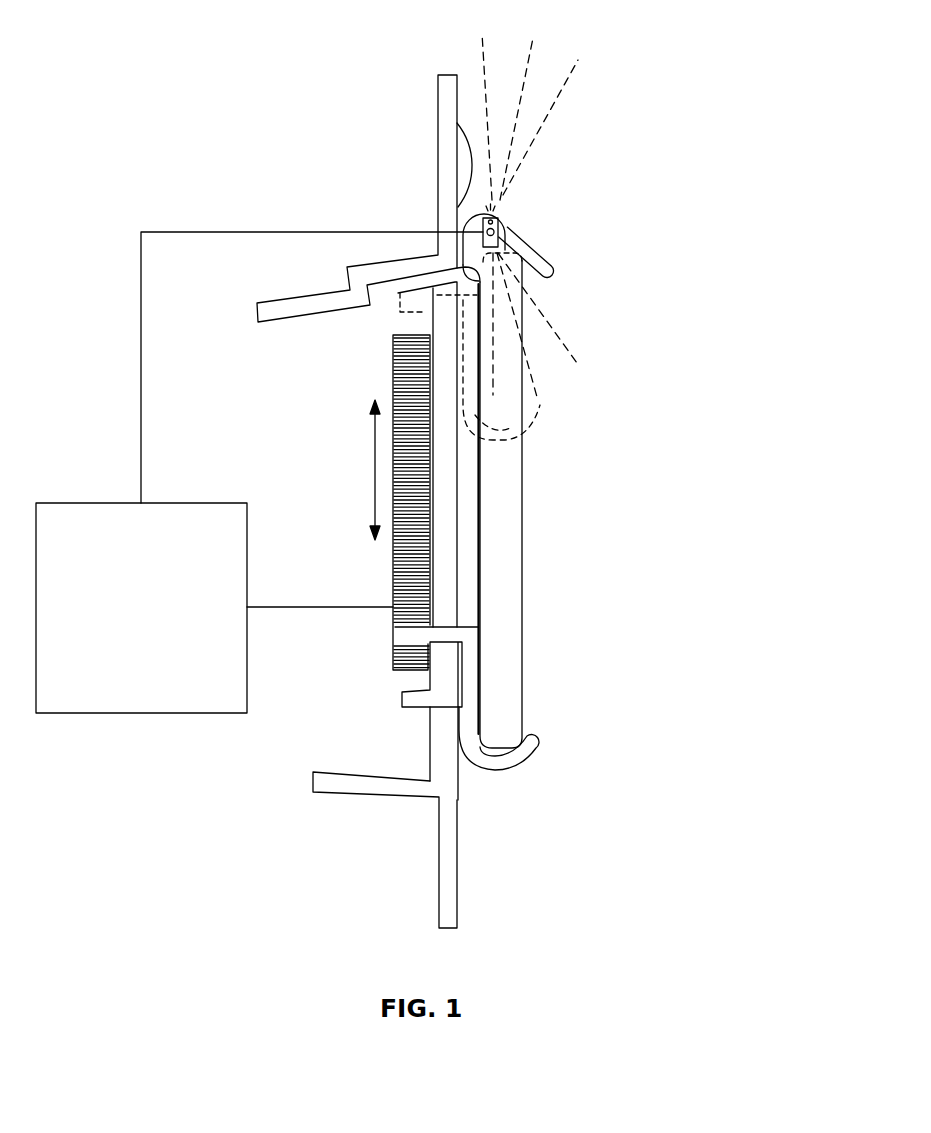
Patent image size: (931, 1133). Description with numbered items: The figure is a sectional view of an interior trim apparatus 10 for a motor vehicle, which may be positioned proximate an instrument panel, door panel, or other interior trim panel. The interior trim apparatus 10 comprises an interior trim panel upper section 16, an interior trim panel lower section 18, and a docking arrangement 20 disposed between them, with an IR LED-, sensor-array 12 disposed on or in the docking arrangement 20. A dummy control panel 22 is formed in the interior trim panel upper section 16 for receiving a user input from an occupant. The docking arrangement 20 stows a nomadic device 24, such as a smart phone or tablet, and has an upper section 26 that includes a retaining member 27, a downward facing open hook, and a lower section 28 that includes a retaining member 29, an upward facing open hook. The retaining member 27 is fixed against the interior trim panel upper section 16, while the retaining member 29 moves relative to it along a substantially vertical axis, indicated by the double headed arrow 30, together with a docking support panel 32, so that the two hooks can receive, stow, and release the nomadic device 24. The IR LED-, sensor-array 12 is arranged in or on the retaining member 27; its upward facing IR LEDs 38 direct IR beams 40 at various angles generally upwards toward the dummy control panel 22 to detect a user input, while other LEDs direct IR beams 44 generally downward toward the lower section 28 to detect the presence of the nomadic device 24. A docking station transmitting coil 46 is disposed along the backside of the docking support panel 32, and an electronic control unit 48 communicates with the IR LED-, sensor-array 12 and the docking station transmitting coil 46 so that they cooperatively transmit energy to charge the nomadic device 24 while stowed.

The interior trim apparatus 10 is at (718, 82).
The IR LED-, sensor-array 12 is at (507, 228).
The interior trim panel upper section 16 is at (438, 110).
The interior trim panel lower section 18 is at (438, 862).
The docking arrangement 20 is at (541, 268).
The dummy control panel 22 is at (487, 167).
The nomadic device 24 is at (517, 513).
The upper section 26 is at (568, 233).
The retaining member 27 is at (548, 278).
The lower section 28 is at (548, 698).
The retaining member 29 is at (540, 420).
The double headed arrow 30 is at (372, 470).
The docking support panel 32 is at (432, 733).
The upward facing IR LEDs 38 is at (483, 222).
The IR beams 40 is at (482, 54).
The IR beams 44 is at (494, 355).
The docking station transmitting coil 46 is at (393, 620).
The electronic control unit 48 is at (93, 503).